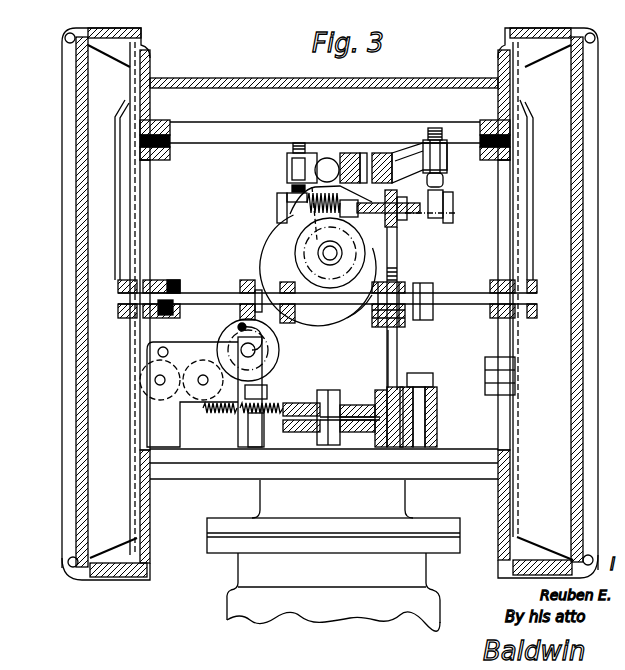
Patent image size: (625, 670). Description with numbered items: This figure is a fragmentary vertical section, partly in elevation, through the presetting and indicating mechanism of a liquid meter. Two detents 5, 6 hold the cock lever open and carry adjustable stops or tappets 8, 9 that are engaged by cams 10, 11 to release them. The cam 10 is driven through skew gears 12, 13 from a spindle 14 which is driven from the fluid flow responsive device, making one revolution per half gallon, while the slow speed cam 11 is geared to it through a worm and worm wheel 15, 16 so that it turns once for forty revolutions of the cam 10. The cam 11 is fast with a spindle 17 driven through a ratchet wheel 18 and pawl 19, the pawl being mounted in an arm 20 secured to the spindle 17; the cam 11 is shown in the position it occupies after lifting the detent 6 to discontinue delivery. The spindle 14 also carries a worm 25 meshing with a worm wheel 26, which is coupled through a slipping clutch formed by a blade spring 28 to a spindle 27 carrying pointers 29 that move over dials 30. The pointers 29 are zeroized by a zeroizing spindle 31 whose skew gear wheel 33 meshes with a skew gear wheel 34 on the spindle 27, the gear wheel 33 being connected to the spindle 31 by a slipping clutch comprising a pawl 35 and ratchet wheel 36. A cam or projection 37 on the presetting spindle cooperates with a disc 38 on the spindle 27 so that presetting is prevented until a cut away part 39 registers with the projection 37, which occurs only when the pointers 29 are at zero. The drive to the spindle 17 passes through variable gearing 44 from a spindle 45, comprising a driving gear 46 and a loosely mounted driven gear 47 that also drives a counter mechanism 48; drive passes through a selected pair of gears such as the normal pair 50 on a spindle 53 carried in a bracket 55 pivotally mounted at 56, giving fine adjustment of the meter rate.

The detent 5 is at (409, 163).
The approximate cut-off detent 6 is at (313, 167).
The adjustable stop or tappet 8 is at (434, 128).
The adjustable stop or tappet 9 is at (300, 143).
The cam 10 is at (443, 192).
The slow speed cam 11 is at (302, 222).
The skew gear 12 is at (397, 225).
The skew gear 13 is at (420, 220).
The spindle 14 is at (397, 252).
The worm 15 is at (342, 215).
The worm wheel 16 is at (305, 253).
The spindle 17 is at (347, 253).
The ratchet wheel 18 is at (277, 210).
The pawl 19 is at (287, 172).
The arm 20 is at (292, 190).
The worm 25 is at (376, 314).
The worm wheel 26 is at (398, 340).
The spindle 27 is at (340, 302).
The blade spring 28 is at (414, 283).
The pointers 29 is at (118, 214).
The dials 30 is at (132, 411).
The zeroizing spindle 31 is at (258, 352).
The skew gear wheel 33 is at (266, 370).
The skew gear wheel 34 is at (243, 288).
The pawl 35 is at (278, 333).
The ratchet wheel 36 is at (240, 325).
The cam or projection 37 is at (307, 272).
The disc 38 is at (284, 312).
The cut away part 39 is at (259, 283).
The gearing 44 is at (350, 398).
The spindle 45 is at (333, 437).
The driving gear 46 is at (305, 432).
The driven gear 47 is at (302, 402).
The counter mechanism 48 is at (189, 394).
The pair of gears 50 is at (377, 435).
The spindle 53 is at (389, 447).
The bracket 55 is at (437, 428).
The pivot 56 is at (418, 405).